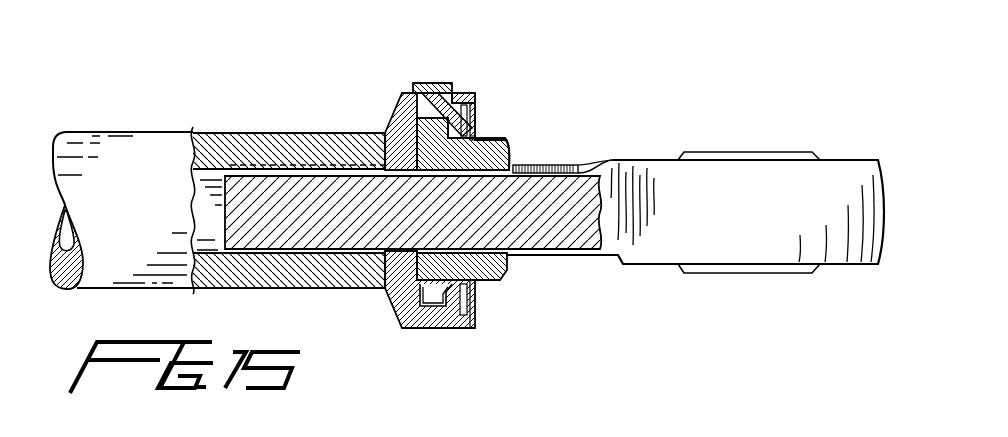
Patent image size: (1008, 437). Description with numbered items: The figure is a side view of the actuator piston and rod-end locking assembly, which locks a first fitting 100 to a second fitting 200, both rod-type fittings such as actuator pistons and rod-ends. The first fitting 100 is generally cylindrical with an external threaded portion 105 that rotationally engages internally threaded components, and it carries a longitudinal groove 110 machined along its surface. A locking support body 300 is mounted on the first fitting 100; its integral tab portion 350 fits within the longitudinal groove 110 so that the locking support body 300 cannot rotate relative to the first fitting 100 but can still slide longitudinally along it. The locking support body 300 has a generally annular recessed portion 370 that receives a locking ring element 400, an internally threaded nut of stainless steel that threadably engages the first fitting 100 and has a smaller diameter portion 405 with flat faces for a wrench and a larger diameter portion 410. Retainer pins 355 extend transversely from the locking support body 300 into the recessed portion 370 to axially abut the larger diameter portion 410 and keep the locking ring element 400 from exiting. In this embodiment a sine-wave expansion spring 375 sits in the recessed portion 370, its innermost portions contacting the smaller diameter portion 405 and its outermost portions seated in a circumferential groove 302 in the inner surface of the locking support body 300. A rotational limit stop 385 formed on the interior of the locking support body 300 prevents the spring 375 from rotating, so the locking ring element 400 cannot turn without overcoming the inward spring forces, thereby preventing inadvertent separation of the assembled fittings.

The first fitting 100 is at (686, 178).
The external threaded portion 105 is at (567, 258).
The longitudinal groove 110 is at (598, 162).
The second fitting 200 is at (135, 168).
The locking support body 300 is at (413, 100).
The circumferential groove 302 is at (462, 95).
The tab portion 350 is at (387, 152).
The retainer pins 355 is at (428, 92).
The recessed portion 370 is at (472, 113).
The spring 375 is at (473, 136).
The rotational limit stop 385 is at (475, 291).
The locking ring element 400 is at (508, 264).
The smaller diameter portion 405 is at (493, 285).
The larger diameter portion 410 is at (437, 297).